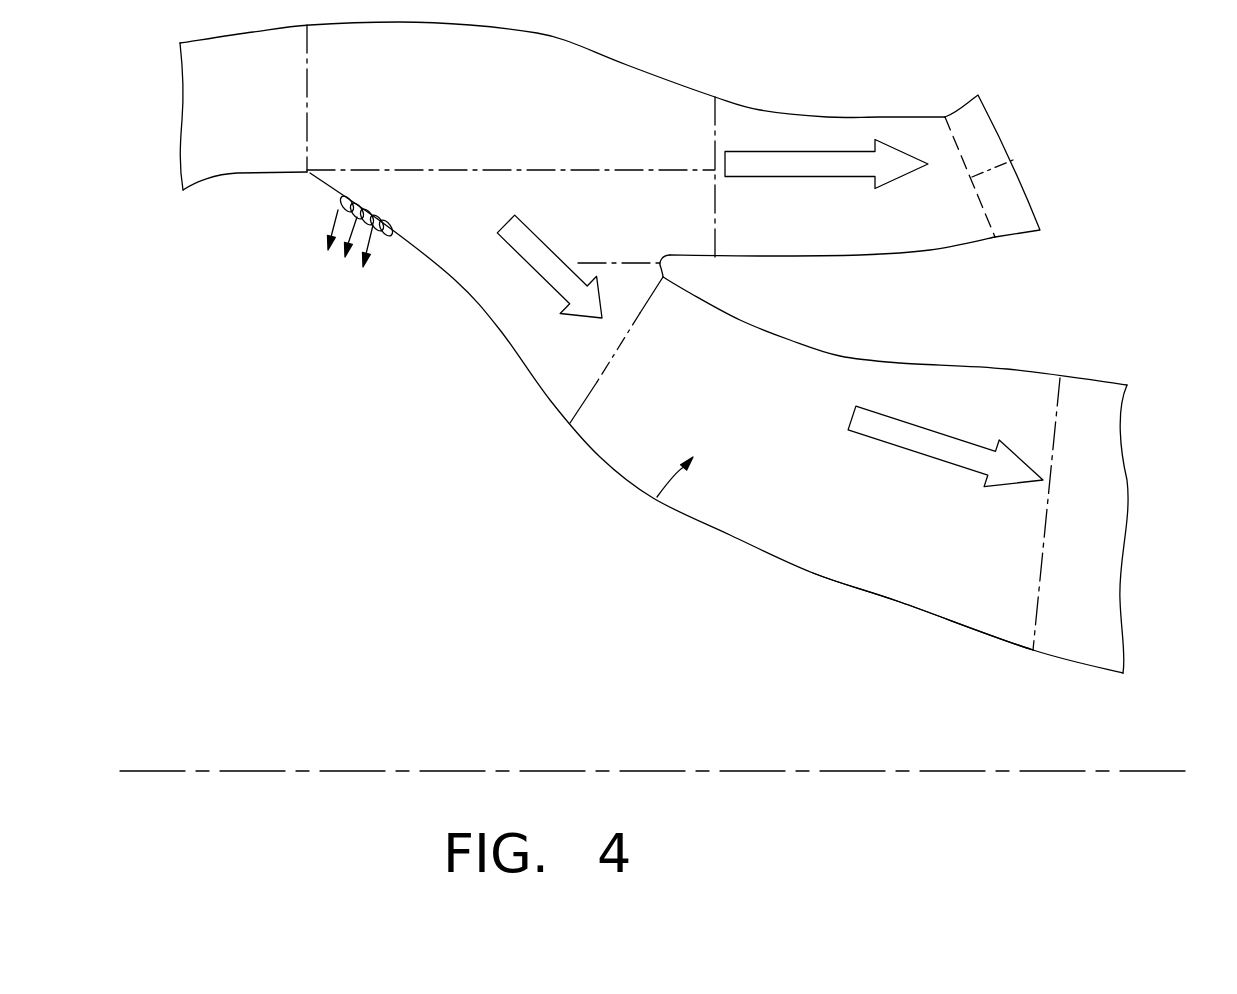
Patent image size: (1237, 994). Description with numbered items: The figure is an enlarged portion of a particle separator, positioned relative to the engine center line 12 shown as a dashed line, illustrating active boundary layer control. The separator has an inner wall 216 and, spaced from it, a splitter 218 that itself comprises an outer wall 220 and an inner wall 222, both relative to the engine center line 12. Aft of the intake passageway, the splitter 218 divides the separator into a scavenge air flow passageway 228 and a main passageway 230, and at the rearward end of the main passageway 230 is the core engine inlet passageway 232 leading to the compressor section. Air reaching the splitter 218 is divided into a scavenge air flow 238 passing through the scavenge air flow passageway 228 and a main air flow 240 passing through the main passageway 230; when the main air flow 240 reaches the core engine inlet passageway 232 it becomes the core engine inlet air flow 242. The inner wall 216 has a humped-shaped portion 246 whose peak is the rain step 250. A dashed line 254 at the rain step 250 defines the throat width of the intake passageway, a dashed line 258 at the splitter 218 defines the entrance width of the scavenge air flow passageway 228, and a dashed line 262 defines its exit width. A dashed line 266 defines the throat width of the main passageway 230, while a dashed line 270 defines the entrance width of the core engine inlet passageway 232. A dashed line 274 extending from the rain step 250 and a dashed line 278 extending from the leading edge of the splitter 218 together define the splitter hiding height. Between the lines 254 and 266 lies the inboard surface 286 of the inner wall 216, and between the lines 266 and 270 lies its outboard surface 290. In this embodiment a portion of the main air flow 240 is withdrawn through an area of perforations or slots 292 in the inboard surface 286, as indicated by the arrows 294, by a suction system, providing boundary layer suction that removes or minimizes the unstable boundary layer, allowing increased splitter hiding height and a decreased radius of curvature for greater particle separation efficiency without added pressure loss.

The engine center line 12 is at (368, 770).
The inner wall 216 is at (206, 176).
The splitter 218 is at (846, 307).
The outer wall 220 is at (933, 252).
The inner wall 222 is at (1007, 370).
The scavenge air flow passageway 228 is at (912, 124).
The main passageway 230 is at (655, 497).
The core engine inlet passageway 232 is at (1095, 470).
The scavenge air flow 238 is at (818, 160).
The main air flow 240 is at (547, 283).
The core engine inlet air flow 242 is at (920, 443).
The humped-shaped portion 246 is at (290, 385).
The rain step 250 is at (311, 198).
The throat width line 254 is at (308, 77).
The scavenge passageway entrance width line 258 is at (713, 118).
The scavenge passageway exit width line 262 is at (1013, 160).
The main passageway throat width line 266 is at (597, 382).
The core engine inlet entrance width line 270 is at (1040, 562).
The rain step reference line 274 is at (513, 168).
The splitter leading edge reference line 278 is at (615, 265).
The inboard surface 286 is at (455, 282).
The outboard surface 290 is at (815, 572).
The perforations 292 is at (341, 282).
The withdrawn air flow arrows 294 is at (386, 236).